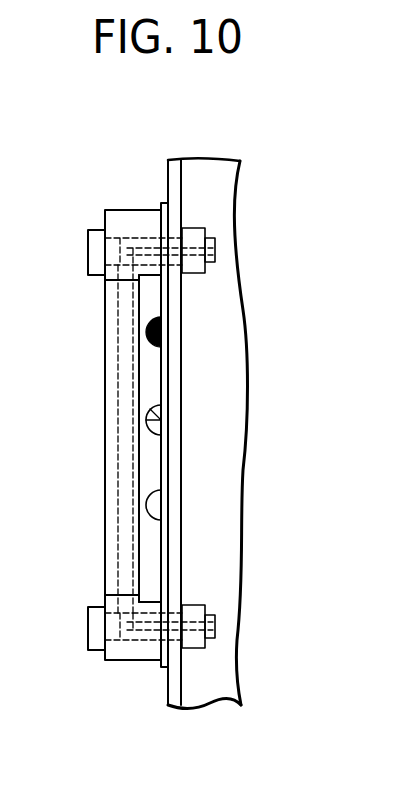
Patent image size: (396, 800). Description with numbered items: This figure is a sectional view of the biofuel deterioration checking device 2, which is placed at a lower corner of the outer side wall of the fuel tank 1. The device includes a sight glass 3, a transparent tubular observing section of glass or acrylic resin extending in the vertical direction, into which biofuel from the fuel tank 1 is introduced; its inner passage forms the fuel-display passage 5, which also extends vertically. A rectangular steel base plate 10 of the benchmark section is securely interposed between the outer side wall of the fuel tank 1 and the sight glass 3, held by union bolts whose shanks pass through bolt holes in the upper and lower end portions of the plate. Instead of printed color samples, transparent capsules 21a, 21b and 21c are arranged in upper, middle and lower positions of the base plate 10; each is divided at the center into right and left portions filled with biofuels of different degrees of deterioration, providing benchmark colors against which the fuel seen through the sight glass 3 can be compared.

The fuel tank 1 is at (214, 170).
The biofuel deterioration checking device 2 is at (52, 170).
The sight glass 3 is at (105, 219).
The fuel-display passage 5 is at (116, 352).
The base plate 10 is at (161, 204).
The transparent capsule 21a is at (162, 505).
The transparent capsule 21b is at (162, 418).
The transparent capsule 21c is at (162, 332).